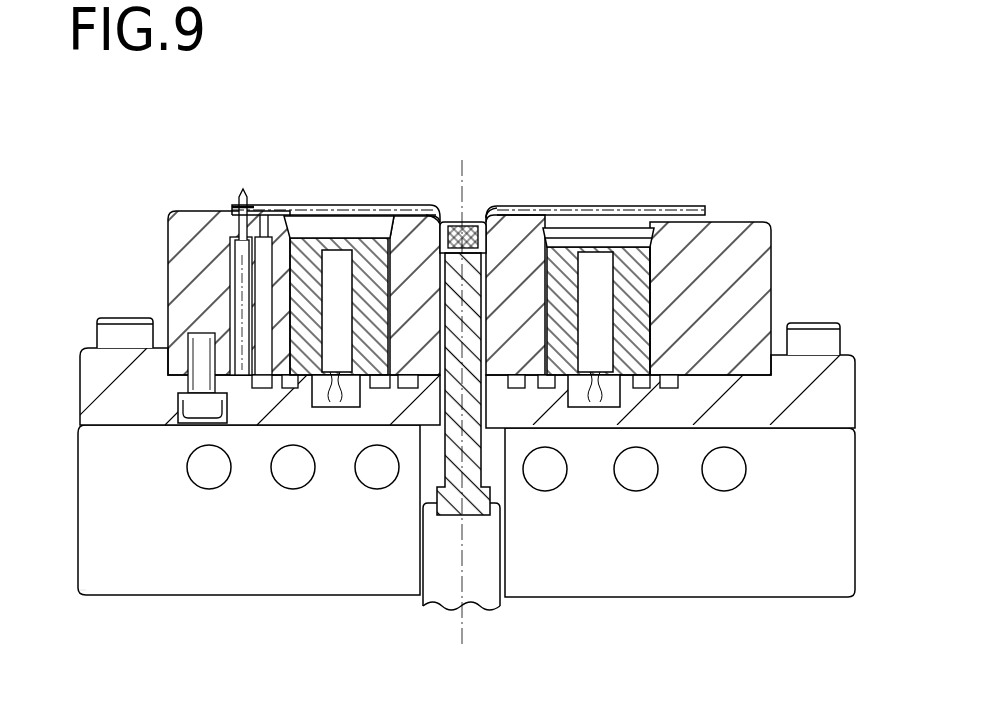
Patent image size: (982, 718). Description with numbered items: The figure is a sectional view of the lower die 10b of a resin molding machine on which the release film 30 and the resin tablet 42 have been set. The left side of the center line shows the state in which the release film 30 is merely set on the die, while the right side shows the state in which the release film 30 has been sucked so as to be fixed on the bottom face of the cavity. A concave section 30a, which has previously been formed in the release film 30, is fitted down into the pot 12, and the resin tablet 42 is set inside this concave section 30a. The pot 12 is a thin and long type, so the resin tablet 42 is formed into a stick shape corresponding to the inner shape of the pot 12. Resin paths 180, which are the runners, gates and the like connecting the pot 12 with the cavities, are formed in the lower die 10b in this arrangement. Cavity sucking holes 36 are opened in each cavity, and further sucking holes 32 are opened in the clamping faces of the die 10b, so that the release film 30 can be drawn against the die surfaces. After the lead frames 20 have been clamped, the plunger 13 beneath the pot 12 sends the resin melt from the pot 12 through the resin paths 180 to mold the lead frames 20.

The lower die 10b is at (760, 291).
The pot 12 is at (487, 220).
The plunger 13 is at (453, 504).
The lead frames 20 is at (268, 208).
The release film 30 is at (337, 212).
The concave section 30a is at (452, 225).
The sucking holes 32 is at (252, 268).
The cavity sucking holes 36 is at (652, 268).
The resin tablet 42 is at (471, 224).
The resin paths 180 is at (405, 210).